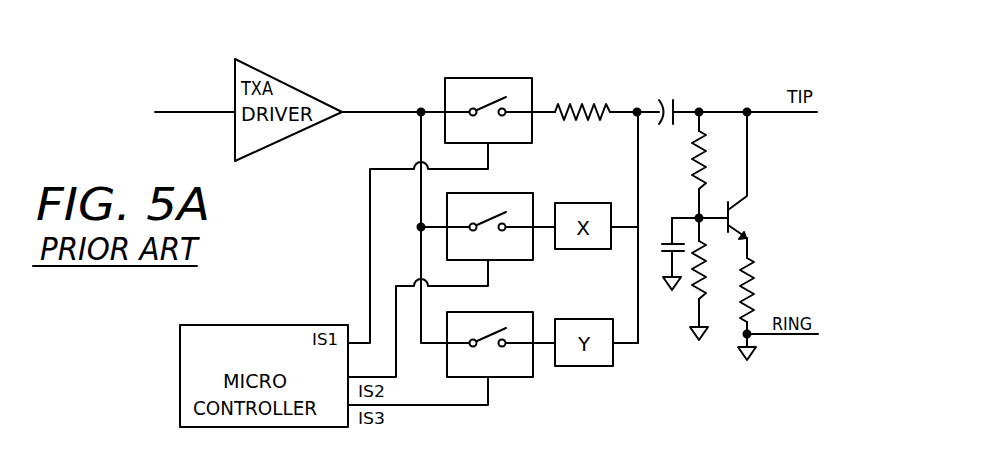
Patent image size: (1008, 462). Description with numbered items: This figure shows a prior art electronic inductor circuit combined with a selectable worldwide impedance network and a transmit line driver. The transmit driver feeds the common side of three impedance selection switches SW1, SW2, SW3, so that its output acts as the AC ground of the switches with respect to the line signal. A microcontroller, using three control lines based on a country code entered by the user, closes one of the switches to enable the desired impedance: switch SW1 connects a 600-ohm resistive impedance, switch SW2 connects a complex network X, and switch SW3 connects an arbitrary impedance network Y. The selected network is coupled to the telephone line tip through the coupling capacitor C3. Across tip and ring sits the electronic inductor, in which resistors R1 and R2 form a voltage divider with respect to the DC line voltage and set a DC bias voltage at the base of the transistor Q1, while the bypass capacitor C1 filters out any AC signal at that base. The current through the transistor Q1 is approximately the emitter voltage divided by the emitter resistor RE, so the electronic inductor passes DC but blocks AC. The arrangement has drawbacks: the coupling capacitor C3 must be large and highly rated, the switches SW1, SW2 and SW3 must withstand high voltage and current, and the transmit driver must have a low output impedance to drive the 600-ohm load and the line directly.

The impedance selection switch SW1 is at (489, 100).
The impedance selection switch SW2 is at (490, 216).
The impedance selection switch SW3 is at (490, 333).
The 600-ohm resistive impedance 600 is at (582, 125).
The coupling capacitor C3 is at (665, 123).
The bypass capacitor C1 is at (664, 254).
The resistor R1 is at (711, 160).
The resistor R2 is at (710, 290).
The emitter resistor RE is at (759, 309).
The transistor Q1 is at (749, 185).